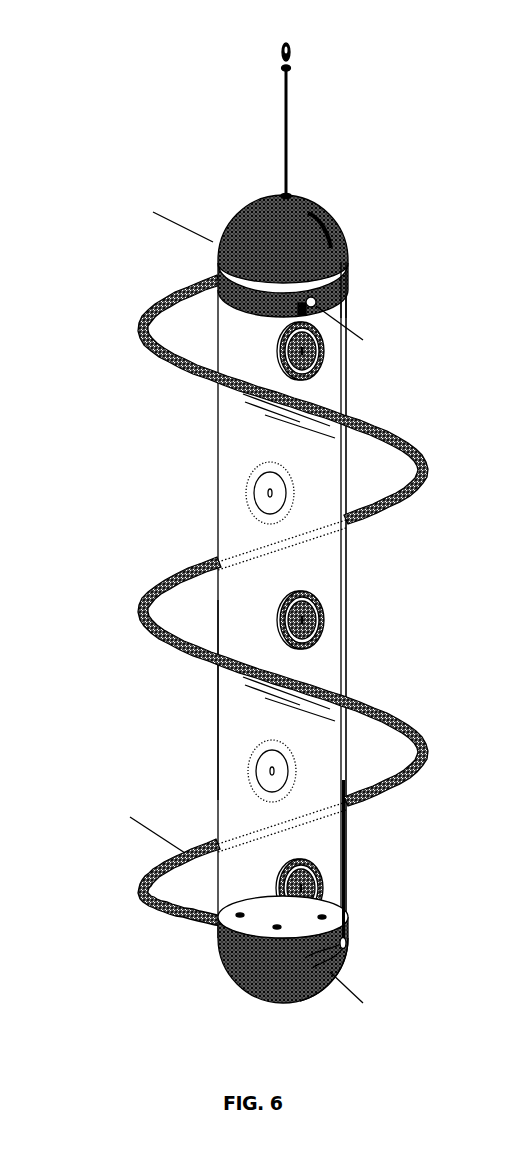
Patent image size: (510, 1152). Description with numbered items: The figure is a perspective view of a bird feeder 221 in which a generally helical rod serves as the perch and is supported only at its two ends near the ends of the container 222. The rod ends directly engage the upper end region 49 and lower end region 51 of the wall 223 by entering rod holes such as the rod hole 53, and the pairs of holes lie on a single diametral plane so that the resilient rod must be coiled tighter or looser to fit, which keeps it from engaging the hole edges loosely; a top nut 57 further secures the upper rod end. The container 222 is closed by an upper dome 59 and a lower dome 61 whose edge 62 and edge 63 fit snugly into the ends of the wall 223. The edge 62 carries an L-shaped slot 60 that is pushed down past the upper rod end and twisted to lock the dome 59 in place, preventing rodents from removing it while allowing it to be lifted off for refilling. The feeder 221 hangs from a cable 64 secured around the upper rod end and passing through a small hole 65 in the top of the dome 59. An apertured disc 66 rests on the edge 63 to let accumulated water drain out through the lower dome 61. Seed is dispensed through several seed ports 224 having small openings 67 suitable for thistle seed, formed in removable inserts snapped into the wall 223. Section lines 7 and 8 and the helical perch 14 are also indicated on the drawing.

The bird feeder 221 is at (106, 166).
The container 222 is at (206, 448).
The wall 223 is at (220, 715).
The seed ports 224 is at (318, 600).
The helical tube 14 is at (380, 428).
The upper dome 59 is at (265, 198).
The cable 64 is at (288, 108).
The hole 65 is at (290, 195).
The top nut 57 is at (330, 222).
The edge 62 is at (217, 277).
The upper end region 49 is at (347, 312).
The L-shaped slot 60 is at (298, 310).
The section line 7- 7 is at (183, 203).
The section line 8- 8 is at (157, 810).
The small openings 67 is at (318, 636).
The lower end region 51 is at (348, 907).
The edge 63 is at (347, 943).
The rod hole 53 is at (347, 952).
The apertured disc 66 is at (230, 918).
The lower dome 61 is at (265, 1002).